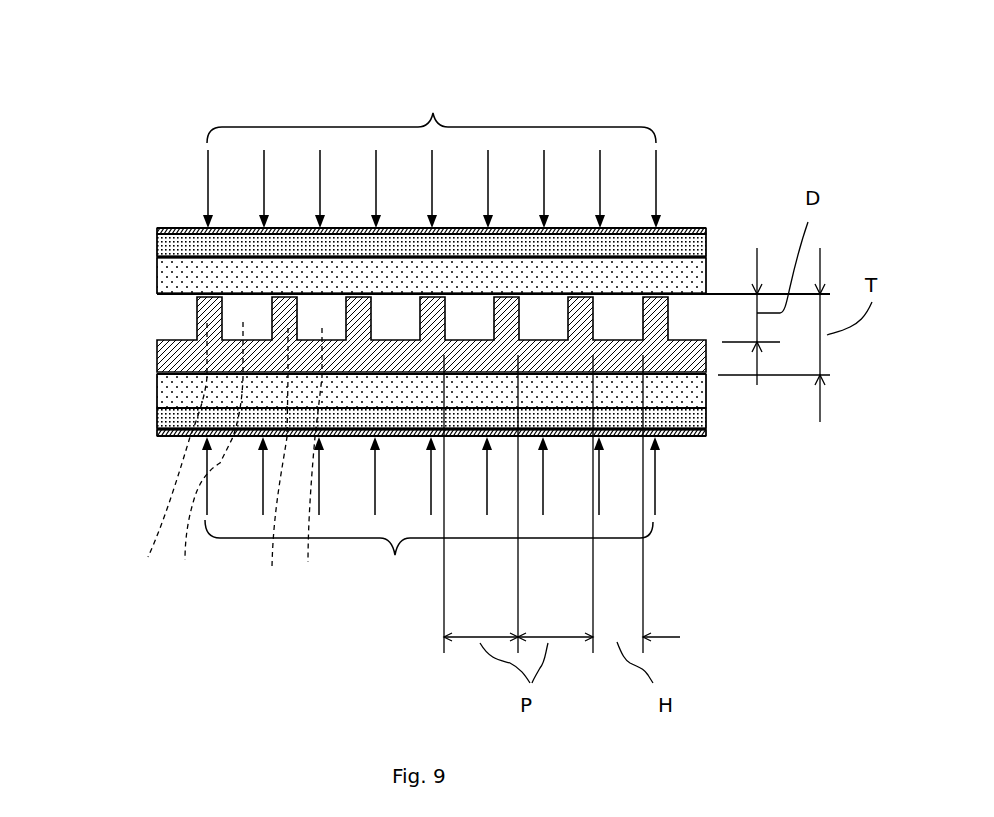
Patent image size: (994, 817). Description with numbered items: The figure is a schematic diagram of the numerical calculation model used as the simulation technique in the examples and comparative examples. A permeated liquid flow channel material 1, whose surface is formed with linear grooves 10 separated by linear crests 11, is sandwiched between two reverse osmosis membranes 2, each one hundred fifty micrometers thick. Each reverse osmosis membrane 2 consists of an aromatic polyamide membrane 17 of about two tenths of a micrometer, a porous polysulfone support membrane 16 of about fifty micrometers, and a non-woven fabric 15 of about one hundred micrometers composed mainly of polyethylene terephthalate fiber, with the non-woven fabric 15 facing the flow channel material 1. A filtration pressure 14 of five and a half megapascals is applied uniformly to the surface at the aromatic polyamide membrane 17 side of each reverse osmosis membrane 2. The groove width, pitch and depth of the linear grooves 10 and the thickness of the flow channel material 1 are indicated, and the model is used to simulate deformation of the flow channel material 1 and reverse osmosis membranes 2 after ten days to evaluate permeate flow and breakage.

The flow channel material 1 is at (163, 362).
The reverse osmosis membrane 2 is at (424, 313).
The linear groove 10 is at (263, 463).
The linear crest 11 is at (213, 464).
The filtration pressure 14 is at (433, 113).
The non-woven fabric 15 is at (173, 280).
The polysulfone support membrane 16 is at (170, 245).
The aromatic polyamide membrane 17 is at (177, 232).